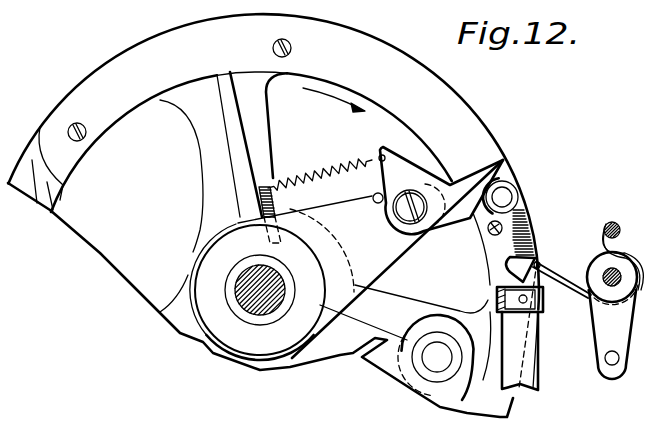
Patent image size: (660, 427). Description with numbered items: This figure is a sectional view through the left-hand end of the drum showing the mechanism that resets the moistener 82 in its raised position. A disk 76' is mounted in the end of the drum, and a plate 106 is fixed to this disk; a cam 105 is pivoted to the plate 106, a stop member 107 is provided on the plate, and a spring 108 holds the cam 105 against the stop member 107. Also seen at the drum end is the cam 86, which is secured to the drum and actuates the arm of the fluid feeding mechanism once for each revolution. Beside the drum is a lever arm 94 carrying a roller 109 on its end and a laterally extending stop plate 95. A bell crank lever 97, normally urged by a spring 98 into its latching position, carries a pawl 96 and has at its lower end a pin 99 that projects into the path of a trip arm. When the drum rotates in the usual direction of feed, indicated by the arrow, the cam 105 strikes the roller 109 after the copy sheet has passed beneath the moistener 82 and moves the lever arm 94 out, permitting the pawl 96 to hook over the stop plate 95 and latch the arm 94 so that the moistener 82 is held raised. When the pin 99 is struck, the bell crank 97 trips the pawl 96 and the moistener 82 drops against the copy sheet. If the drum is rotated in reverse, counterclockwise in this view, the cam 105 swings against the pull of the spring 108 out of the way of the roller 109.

The cam 86 is at (110, 72).
The disk 76' is at (260, 244).
The plate 106 is at (366, 268).
The spring 108 is at (318, 165).
The cam 105 is at (477, 176).
The stop member 107 is at (372, 200).
The roller 109 is at (510, 187).
The stop plate 95 is at (497, 298).
The lever arm 94 is at (530, 377).
The pawl 96 is at (580, 240).
The bell crank lever 97 is at (603, 318).
The pin 99 is at (607, 362).
The spring 98 is at (627, 243).
The moistener 82 is at (41, 420).